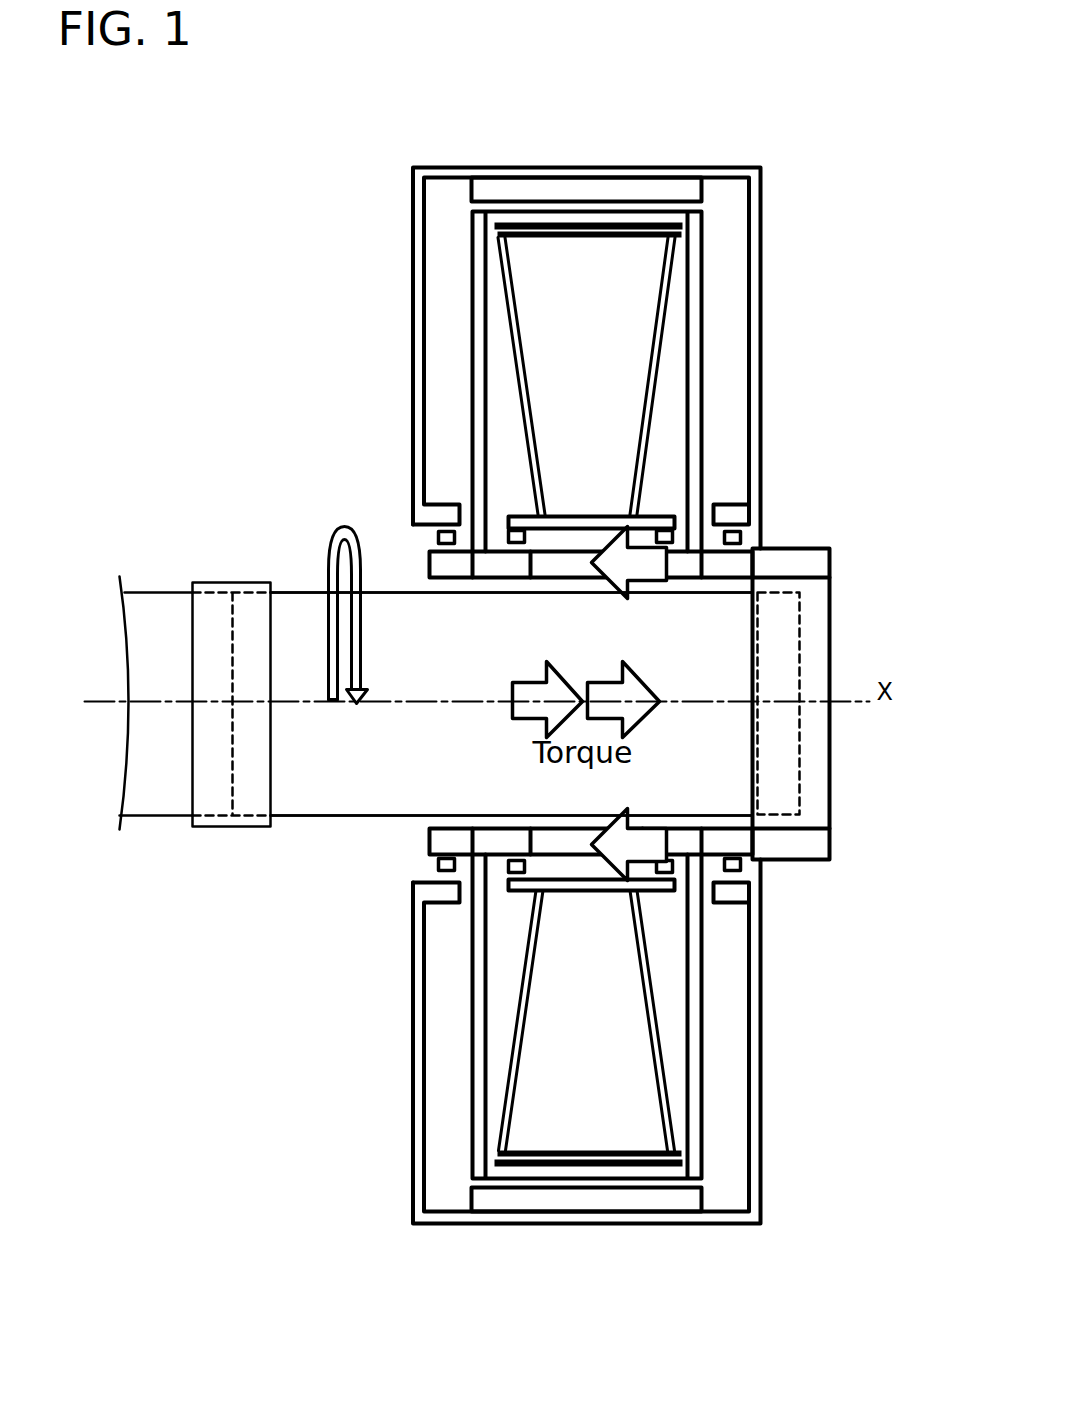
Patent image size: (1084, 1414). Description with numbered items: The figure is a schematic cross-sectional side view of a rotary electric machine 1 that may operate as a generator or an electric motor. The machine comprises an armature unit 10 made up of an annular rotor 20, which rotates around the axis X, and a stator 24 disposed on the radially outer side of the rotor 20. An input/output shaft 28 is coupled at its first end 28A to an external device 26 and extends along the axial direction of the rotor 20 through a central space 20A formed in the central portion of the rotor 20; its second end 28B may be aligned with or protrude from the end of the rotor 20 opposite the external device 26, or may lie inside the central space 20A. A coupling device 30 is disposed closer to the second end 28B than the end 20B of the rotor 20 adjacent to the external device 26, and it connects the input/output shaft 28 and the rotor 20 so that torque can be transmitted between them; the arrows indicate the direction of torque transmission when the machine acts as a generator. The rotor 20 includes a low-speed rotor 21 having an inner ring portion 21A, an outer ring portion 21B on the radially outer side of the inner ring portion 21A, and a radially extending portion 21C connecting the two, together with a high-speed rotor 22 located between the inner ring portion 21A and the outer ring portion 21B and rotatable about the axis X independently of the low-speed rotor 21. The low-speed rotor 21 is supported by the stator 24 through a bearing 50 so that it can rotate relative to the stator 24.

The rotary electric machine 1 is at (896, 66).
The armature unit 10 is at (670, 80).
The rotor 20 is at (702, 119).
The low-speed rotor 21 is at (594, 221).
The inner ring portion 21A is at (487, 570).
The outer ring portion 21B is at (495, 220).
The radially extending portion 21C is at (700, 378).
The high-speed rotor 22 is at (645, 234).
The stator 24 is at (522, 192).
The external device 26 is at (153, 598).
The input/output shaft 28 is at (316, 800).
The first end 28A is at (237, 778).
The second end 28B is at (803, 762).
The coupling device 30 is at (822, 630).
The bearing 50 is at (436, 533).
The central space 20A is at (422, 825).
The end of the rotor 20B is at (430, 570).